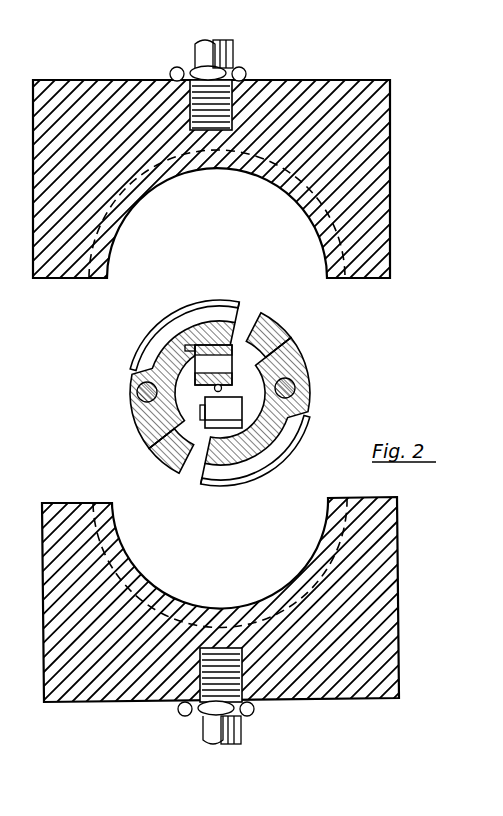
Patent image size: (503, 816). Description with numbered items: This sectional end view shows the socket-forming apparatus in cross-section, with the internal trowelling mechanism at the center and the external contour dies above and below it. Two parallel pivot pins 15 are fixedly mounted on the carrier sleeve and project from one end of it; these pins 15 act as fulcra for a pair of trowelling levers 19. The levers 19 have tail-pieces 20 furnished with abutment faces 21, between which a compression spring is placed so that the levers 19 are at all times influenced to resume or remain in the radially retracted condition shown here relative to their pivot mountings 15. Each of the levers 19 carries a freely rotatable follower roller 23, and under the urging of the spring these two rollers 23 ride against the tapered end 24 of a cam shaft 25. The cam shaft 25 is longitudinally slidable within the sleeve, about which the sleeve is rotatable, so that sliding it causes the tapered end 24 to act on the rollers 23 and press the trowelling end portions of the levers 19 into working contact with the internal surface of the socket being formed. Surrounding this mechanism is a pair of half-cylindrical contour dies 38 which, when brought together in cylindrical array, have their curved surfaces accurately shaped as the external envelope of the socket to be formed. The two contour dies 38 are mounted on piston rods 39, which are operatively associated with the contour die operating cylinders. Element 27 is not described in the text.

The pivot pins 15 is at (137, 392).
The trowelling levers 19 is at (235, 312).
The tail-pieces 20 is at (262, 330).
The abutment faces 21 is at (272, 352).
The follower roller 23 is at (200, 324).
The tapered end 24 is at (212, 394).
The cam shaft 25 is at (236, 372).
The outer ring segment 27 is at (216, 305).
The half-cylindrical contour dies 38 is at (378, 165).
The piston rods 39 is at (197, 50).